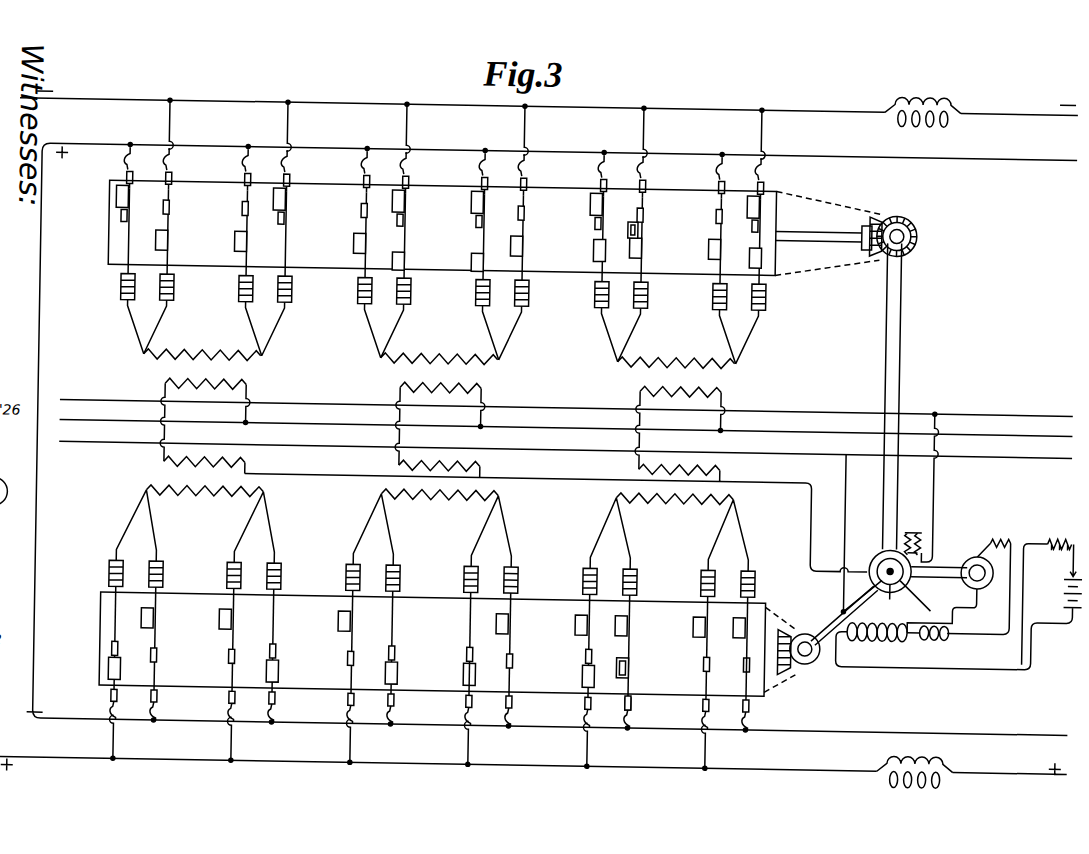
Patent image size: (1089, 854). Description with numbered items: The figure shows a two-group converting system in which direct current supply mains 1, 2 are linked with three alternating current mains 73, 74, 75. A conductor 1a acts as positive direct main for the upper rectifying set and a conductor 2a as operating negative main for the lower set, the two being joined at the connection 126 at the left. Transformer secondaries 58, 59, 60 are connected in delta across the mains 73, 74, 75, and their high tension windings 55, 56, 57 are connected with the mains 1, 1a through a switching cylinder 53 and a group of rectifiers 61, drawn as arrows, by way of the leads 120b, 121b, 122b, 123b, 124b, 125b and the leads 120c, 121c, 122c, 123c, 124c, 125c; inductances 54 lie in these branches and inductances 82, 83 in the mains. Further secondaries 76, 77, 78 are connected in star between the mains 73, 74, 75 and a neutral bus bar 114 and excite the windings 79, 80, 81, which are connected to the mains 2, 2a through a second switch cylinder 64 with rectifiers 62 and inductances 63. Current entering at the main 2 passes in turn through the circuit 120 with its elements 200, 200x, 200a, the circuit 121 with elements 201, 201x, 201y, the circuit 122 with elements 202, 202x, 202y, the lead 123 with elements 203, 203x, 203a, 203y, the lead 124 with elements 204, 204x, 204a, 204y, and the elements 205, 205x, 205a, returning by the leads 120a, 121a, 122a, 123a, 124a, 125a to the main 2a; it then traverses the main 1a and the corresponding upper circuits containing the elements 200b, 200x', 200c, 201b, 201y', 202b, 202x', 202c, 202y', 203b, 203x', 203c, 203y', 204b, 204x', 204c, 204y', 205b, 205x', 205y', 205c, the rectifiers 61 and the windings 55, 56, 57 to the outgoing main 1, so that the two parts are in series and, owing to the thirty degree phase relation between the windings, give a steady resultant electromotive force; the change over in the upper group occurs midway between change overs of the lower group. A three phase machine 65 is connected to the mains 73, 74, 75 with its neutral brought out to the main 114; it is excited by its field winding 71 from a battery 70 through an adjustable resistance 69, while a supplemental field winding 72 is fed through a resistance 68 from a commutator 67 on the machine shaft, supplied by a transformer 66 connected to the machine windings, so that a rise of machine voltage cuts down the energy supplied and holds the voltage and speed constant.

The direct current supply main 1 is at (1030, 95).
The positive direct main 1a is at (555, 434).
The direct current supply main 2 is at (533, 766).
The negative direct current main 2a is at (547, 716).
The inductance 82 is at (923, 103).
The inductance 83 is at (914, 781).
The lead 120b is at (146, 132).
The lead 123c is at (173, 144).
The lead 123b is at (264, 130).
The lead 120c is at (291, 144).
The lead 124b is at (383, 128).
The lead 121c is at (410, 144).
The lead 121b is at (501, 126).
The lead 124c is at (528, 144).
The lead 122b is at (608, 146).
The lead 125c is at (647, 144).
The lead 125b is at (726, 146).
The lead 122c is at (765, 144).
The circuit element 200b is at (126, 180).
The circuit element 200x' is at (201, 201).
The circuit element 203c is at (174, 176).
The circuit element 203y' is at (150, 231).
The circuit element 203b is at (246, 204).
The circuit element 203x' is at (223, 231).
The circuit element 200c is at (293, 203).
The circuit element 204b is at (365, 176).
The circuit element 204x' is at (339, 232).
The circuit element 201y' is at (422, 228).
The circuit element 201b is at (481, 209).
The circuit element 201x is at (487, 200).
The circuit element 204c is at (527, 185).
The circuit element 204y' is at (540, 233).
The circuit element 202b is at (600, 208).
The circuit element 202x' is at (580, 227).
The circuit element 205y' is at (620, 221).
The circuit element 205c is at (642, 214).
The circuit element 205b is at (712, 214).
The circuit element 205x' is at (731, 430).
The circuit element 202c is at (765, 176).
The circuit element 202y' is at (781, 232).
The switching cylinder 53 is at (776, 214).
The inductance 54 is at (138, 292).
The rectifier 61 is at (136, 335).
The high tension winding 55 is at (202, 345).
The high tension winding 56 is at (440, 348).
The high tension winding 57 is at (677, 352).
The transformer secondary 58 is at (250, 380).
The transformer secondary 59 is at (488, 380).
The transformer secondary 60 is at (720, 382).
The alternating current main 73 is at (566, 397).
The alternating current main 74 is at (566, 419).
The alternating current main 75 is at (565, 441).
The transformer secondary 76 is at (213, 460).
The transformer secondary 77 is at (452, 463).
The transformer secondary 78 is at (556, 507).
The supplementary main 114 is at (836, 462).
The winding 79 is at (205, 505).
The winding 80 is at (440, 508).
The winding 81 is at (675, 510).
The rectifier 62 is at (132, 523).
The inductance 63 is at (432, 581).
The circuit 120 is at (127, 746).
The lead 123a is at (167, 718).
The lead 123 is at (245, 744).
The lead 120a is at (285, 716).
The lead 124 is at (364, 742).
The lead 121a is at (404, 714).
The circuit 121 is at (482, 740).
The lead 124a is at (522, 712).
The circuit 122 is at (601, 738).
The lead 125a is at (641, 710).
The connection 126 is at (719, 736).
The lead 122a is at (759, 708).
The circuit element 200 is at (117, 660).
The circuit element 200x is at (91, 638).
The circuit element 203y is at (173, 612).
The circuit element 203a is at (168, 672).
The circuit element 203x is at (208, 625).
The circuit element 203 is at (240, 662).
The circuit element 200a is at (288, 666).
The circuit element 204x is at (327, 611).
The circuit element 204 is at (358, 662).
The circuit element 201y is at (409, 666).
The circuit element 201 is at (475, 652).
The circuit element 204y is at (527, 617).
The circuit element 204a is at (523, 660).
The circuit element 202 is at (591, 662).
The circuit element 202x is at (603, 619).
The circuit element 202y is at (716, 631).
The circuit element 205 is at (668, 648).
The circuit element 205a is at (640, 670).
The circuit element 205x is at (714, 652).
The switch cylinder 64 is at (821, 640).
The three phase alternating current machine 65 is at (890, 552).
The transformer 66 is at (921, 487).
The commutator 67 is at (975, 541).
The resistance 68 is at (980, 573).
The adjustable resistance 69 is at (1050, 590).
The battery 70 is at (959, 619).
The field winding 71 is at (877, 642).
The supplemental field winding 72 is at (958, 617).